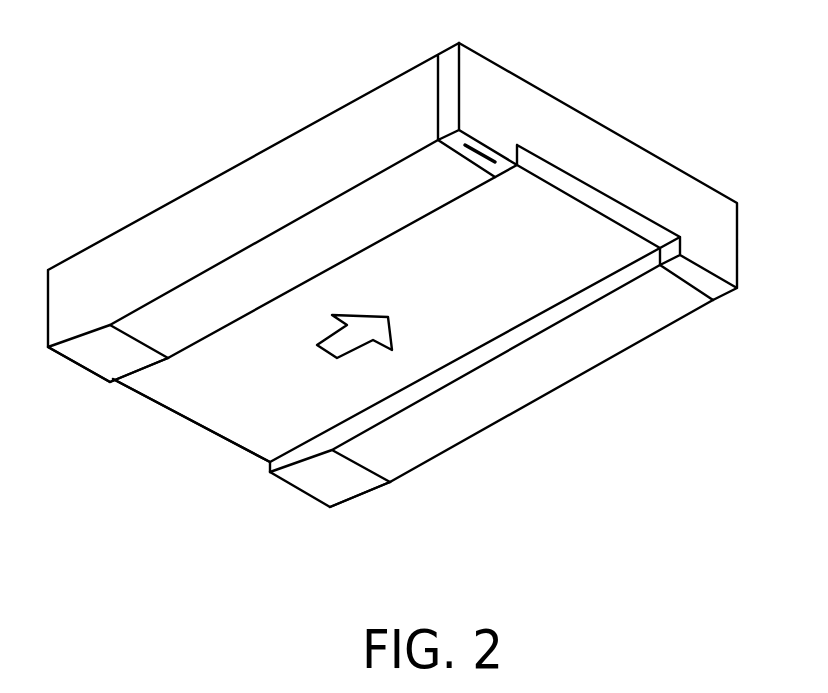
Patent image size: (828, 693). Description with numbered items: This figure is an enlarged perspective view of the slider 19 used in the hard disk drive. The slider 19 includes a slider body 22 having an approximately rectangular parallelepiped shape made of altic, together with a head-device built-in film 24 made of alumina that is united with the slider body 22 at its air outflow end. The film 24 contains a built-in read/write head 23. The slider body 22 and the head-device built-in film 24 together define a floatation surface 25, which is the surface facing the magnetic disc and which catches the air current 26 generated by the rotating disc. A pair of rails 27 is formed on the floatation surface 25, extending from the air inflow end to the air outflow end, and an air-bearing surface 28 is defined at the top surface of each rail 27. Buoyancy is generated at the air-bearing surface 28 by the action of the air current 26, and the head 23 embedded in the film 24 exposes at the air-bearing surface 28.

The slider 19 is at (257, 150).
The slider body 22 is at (702, 308).
The read/write head 23 is at (477, 142).
The head-device built-in film 24 is at (738, 218).
The floatation surface 25 is at (455, 308).
The air current 26 is at (329, 354).
The rails 27 is at (220, 330).
The air-bearing surface 28 is at (443, 195).